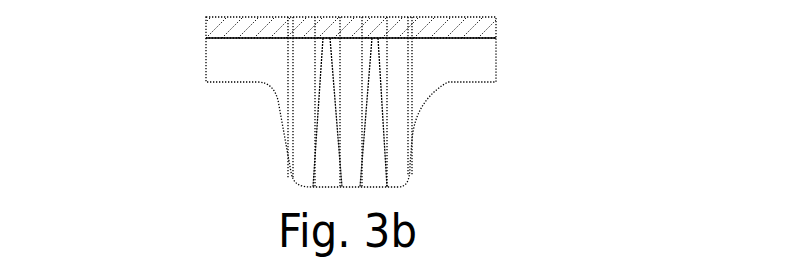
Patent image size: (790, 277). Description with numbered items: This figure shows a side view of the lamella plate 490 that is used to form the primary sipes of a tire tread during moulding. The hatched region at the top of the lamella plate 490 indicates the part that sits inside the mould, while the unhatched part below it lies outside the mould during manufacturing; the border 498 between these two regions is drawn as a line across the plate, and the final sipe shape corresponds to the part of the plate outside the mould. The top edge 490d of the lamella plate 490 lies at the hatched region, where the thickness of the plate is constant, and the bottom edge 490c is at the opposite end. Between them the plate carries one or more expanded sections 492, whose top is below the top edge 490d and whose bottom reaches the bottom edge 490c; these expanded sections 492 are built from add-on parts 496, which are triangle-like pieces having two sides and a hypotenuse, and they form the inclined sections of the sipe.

The lamella plate 490 is at (325, 95).
The top edge 490d is at (445, 15).
The border 498 is at (496, 40).
The bottom edge 490c is at (450, 83).
The expanded section 492 is at (332, 140).
The add-on part 496 is at (378, 140).